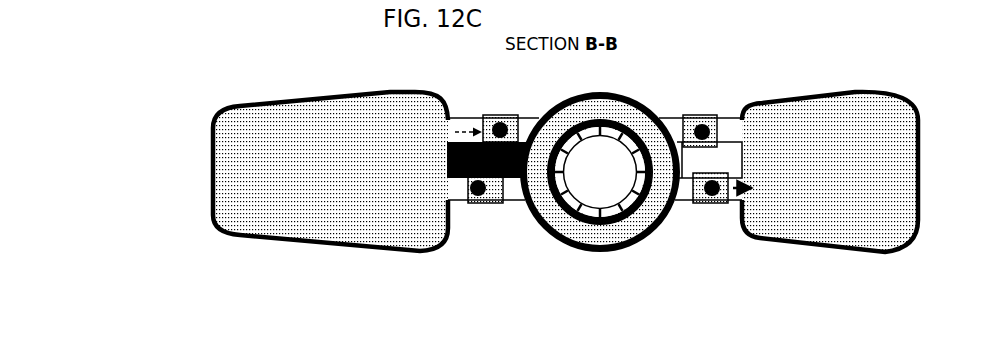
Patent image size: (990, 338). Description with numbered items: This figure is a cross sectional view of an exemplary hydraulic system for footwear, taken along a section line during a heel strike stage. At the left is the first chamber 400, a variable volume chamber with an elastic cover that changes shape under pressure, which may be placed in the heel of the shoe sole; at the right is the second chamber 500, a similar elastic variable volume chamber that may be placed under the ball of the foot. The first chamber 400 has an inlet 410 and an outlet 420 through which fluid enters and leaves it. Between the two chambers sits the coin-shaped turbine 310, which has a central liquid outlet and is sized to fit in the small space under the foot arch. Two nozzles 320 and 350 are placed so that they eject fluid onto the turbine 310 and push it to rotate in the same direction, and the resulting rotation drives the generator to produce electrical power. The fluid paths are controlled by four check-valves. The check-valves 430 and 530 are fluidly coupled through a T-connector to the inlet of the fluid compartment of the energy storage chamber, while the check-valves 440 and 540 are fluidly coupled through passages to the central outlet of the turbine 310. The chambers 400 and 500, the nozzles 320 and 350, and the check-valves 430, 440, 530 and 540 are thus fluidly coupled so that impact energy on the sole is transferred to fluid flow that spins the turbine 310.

The turbine 310 is at (589, 122).
The nozzle 320 is at (575, 212).
The nozzle 350 is at (629, 124).
The first chamber 400 is at (389, 90).
The inlet 410 is at (442, 191).
The outlet 420 is at (454, 117).
The check-valve 430 is at (508, 112).
The check-valve 440 is at (489, 209).
The second chamber 500 is at (858, 88).
The check-valve 530 is at (709, 206).
The check-valve 540 is at (707, 114).